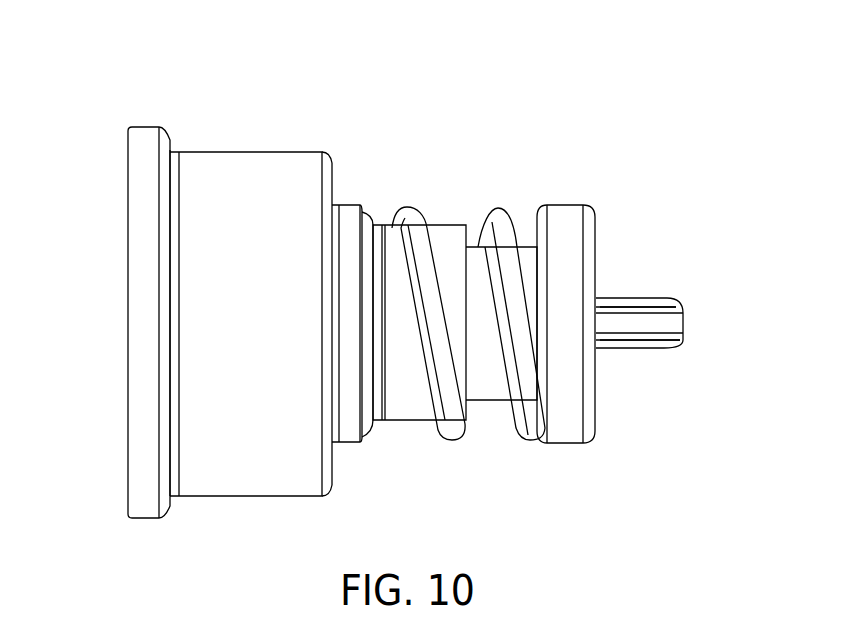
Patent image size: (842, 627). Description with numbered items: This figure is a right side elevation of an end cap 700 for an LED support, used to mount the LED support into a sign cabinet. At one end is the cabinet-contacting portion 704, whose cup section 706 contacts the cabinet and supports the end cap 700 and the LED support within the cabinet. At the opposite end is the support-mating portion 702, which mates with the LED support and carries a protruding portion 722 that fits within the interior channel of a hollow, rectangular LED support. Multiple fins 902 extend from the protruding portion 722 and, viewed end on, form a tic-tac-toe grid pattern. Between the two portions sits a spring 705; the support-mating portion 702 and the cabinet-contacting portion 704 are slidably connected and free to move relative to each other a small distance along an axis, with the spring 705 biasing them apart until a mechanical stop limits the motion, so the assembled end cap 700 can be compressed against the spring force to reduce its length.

The end cap 700 is at (660, 128).
The support-mating portion 702 is at (622, 205).
The cabinet-contacting portion 704 is at (153, 101).
The spring 705 is at (411, 212).
The cup section 706 is at (134, 465).
The protruding portion 722 is at (688, 324).
The fins 902 is at (612, 310).